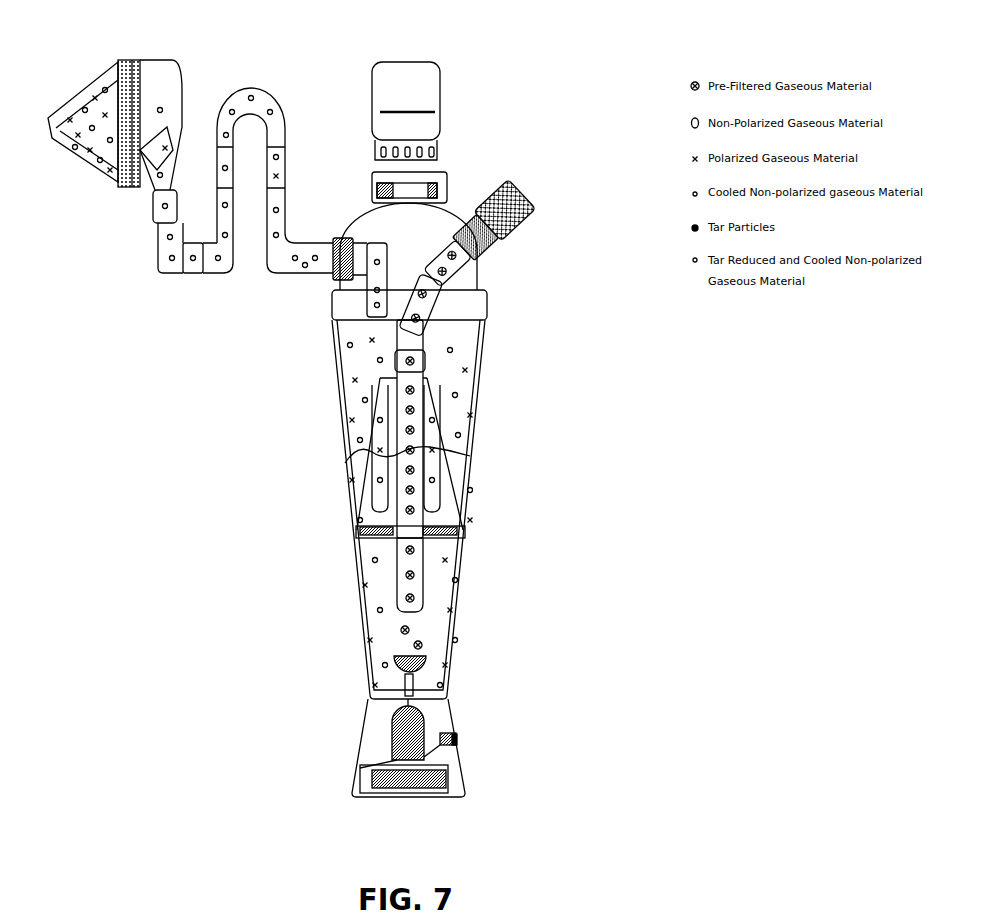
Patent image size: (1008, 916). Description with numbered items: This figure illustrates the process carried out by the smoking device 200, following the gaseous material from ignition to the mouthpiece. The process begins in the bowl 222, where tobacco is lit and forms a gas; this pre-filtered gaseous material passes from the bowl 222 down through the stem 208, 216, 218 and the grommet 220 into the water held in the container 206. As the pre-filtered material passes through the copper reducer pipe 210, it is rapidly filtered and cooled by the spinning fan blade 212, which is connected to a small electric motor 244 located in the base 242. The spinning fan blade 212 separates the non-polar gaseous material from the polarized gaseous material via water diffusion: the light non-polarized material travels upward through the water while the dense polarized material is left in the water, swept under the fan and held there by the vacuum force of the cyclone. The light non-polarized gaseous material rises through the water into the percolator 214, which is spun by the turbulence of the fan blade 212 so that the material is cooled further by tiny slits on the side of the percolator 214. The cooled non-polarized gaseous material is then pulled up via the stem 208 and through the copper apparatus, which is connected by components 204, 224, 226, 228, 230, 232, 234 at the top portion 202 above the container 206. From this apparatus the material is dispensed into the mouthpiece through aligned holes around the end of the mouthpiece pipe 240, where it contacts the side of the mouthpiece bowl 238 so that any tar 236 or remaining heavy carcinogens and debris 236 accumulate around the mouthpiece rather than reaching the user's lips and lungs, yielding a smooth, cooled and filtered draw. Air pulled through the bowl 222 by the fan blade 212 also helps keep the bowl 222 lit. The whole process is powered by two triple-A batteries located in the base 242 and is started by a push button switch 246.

The smoking device 200 is at (543, 50).
The top portion 202 is at (350, 223).
The copper apparatus component 204 is at (334, 278).
The container 206 is at (337, 380).
The stem 208 is at (401, 540).
The copper reducer pipe 210 is at (418, 553).
The fan blade 212 is at (398, 659).
The percolator 214 is at (440, 413).
The stem 216 is at (424, 323).
The stem 218 is at (437, 252).
The grommet 220 is at (486, 256).
The bowl 222 is at (525, 228).
The copper apparatus component 224 is at (283, 272).
The copper apparatus component 226 is at (290, 155).
The copper apparatus component 228 is at (244, 86).
The copper apparatus component 230 is at (216, 160).
The copper apparatus component 232 is at (222, 276).
The copper apparatus component 234 is at (157, 268).
The tar and debris 236 is at (120, 183).
The mouthpiece bowl 238 is at (55, 143).
The mouthpiece pipe 240 is at (120, 105).
The base 242 is at (362, 726).
The electric motor 244 is at (426, 722).
The push button switch 246 is at (457, 732).